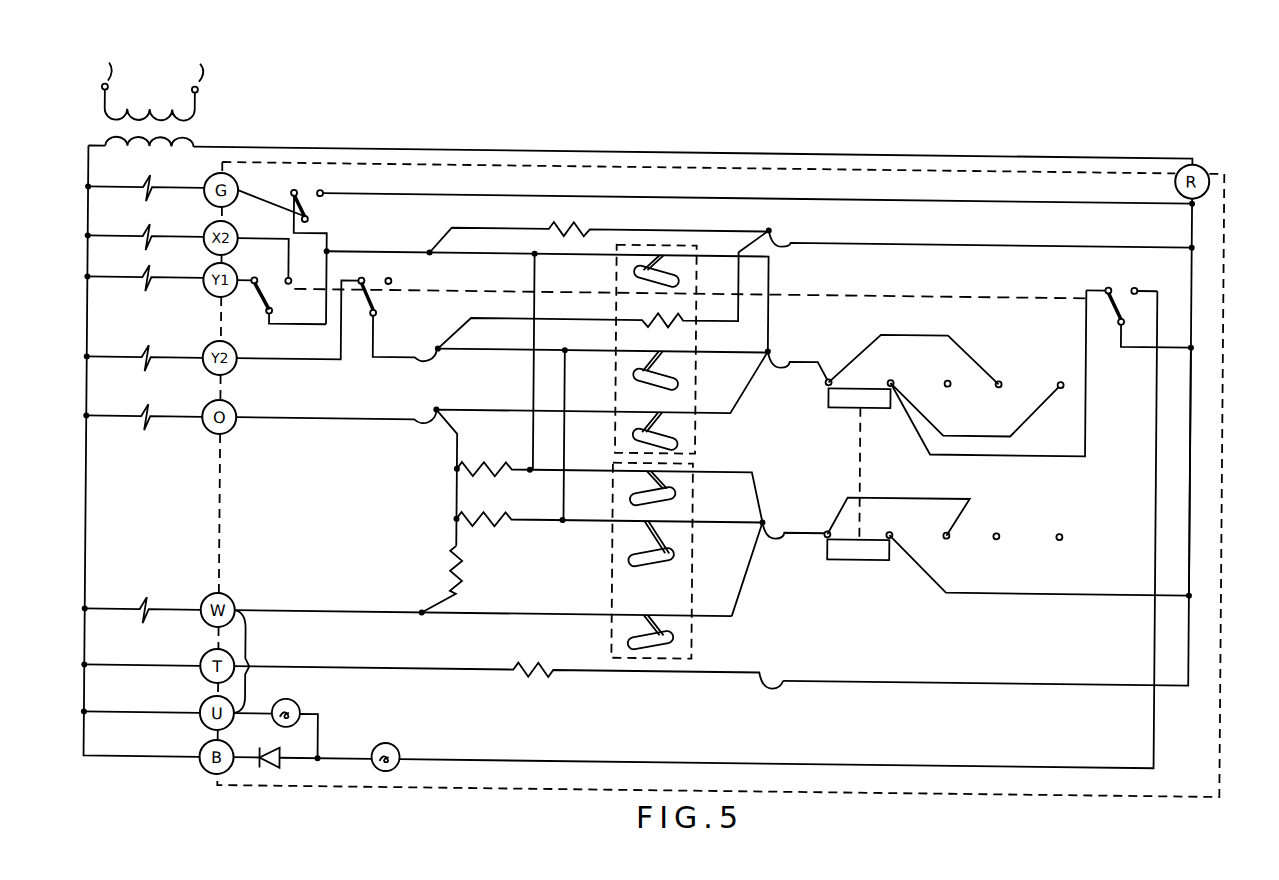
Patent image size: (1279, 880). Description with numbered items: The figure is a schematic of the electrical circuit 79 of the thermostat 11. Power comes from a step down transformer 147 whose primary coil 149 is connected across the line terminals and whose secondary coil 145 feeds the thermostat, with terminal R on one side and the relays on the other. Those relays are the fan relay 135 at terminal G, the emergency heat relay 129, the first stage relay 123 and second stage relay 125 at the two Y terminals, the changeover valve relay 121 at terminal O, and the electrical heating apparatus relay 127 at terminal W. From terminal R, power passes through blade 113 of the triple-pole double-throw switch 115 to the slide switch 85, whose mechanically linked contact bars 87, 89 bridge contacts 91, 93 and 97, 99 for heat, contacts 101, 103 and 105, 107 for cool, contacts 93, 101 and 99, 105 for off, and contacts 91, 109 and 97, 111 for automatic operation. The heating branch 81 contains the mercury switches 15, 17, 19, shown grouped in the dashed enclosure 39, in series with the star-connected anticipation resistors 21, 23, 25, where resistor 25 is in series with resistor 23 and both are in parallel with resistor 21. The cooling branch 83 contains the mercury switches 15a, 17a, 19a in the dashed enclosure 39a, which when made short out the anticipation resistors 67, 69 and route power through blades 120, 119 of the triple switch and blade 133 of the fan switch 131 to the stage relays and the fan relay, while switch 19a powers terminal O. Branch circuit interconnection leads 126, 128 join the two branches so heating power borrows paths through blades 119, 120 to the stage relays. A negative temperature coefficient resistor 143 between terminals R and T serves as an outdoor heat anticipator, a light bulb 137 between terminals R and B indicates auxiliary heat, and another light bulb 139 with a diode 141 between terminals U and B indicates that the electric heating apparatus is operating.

The step down transformer 147 is at (183, 100).
The primary coil 149 is at (200, 108).
The secondary coil 145 is at (192, 139).
The fan relay 135 is at (141, 185).
The emergency heat relay 129 is at (141, 234).
The first stage relay 123 is at (141, 275).
The second stage relay 125 is at (141, 355).
The changeover valve relay 121 is at (141, 414).
The electrical heating apparatus relay 127 is at (141, 607).
The blade 133 is at (312, 211).
The fan switch 131 is at (714, 251).
The blade 119 is at (258, 300).
The blade 120 is at (376, 303).
The resistor 67 is at (559, 222).
The resistor 69 is at (632, 314).
The relay contact set 39a is at (656, 331).
The mercury switch 15a is at (632, 268).
The mercury switch 17a is at (632, 373).
The mercury switch 19a is at (632, 436).
The cooling branch circuit 83 is at (531, 361).
The branch circuit interconnection lead 126 is at (533, 391).
The heating branch circuit 81 is at (456, 516).
The resistor 21 is at (503, 446).
The branch circuit interconnection lead 128 is at (563, 495).
The resistor 23 is at (490, 522).
The resistor 25 is at (455, 560).
The mercury switch 15 is at (632, 495).
The mercury switch 17 is at (630, 557).
The mercury switch 19 is at (630, 638).
The negative temperature coefficient resistor 143 is at (530, 641).
The relay contact set 39 is at (655, 561).
The contact 109 is at (825, 375).
The contact bar 87 is at (855, 400).
The contact 91 is at (891, 372).
The contact 93 is at (948, 372).
The contact 101 is at (1013, 351).
The contact 103 is at (1068, 351).
The triple-pole double-throw switch 115 is at (1115, 301).
The blade 113 is at (1150, 275).
The slide switch 85 is at (1081, 448).
The electrical circuit 79 is at (1197, 428).
The contact 111 is at (826, 528).
The contact bar 89 is at (872, 552).
The contact 97 is at (912, 508).
The contact 99 is at (947, 530).
The contact 105 is at (998, 524).
The contact 107 is at (1062, 524).
The light bulb 137 is at (395, 742).
The light bulb 139 is at (298, 700).
The diode 141 is at (270, 747).
The thermostat 11 is at (1222, 614).